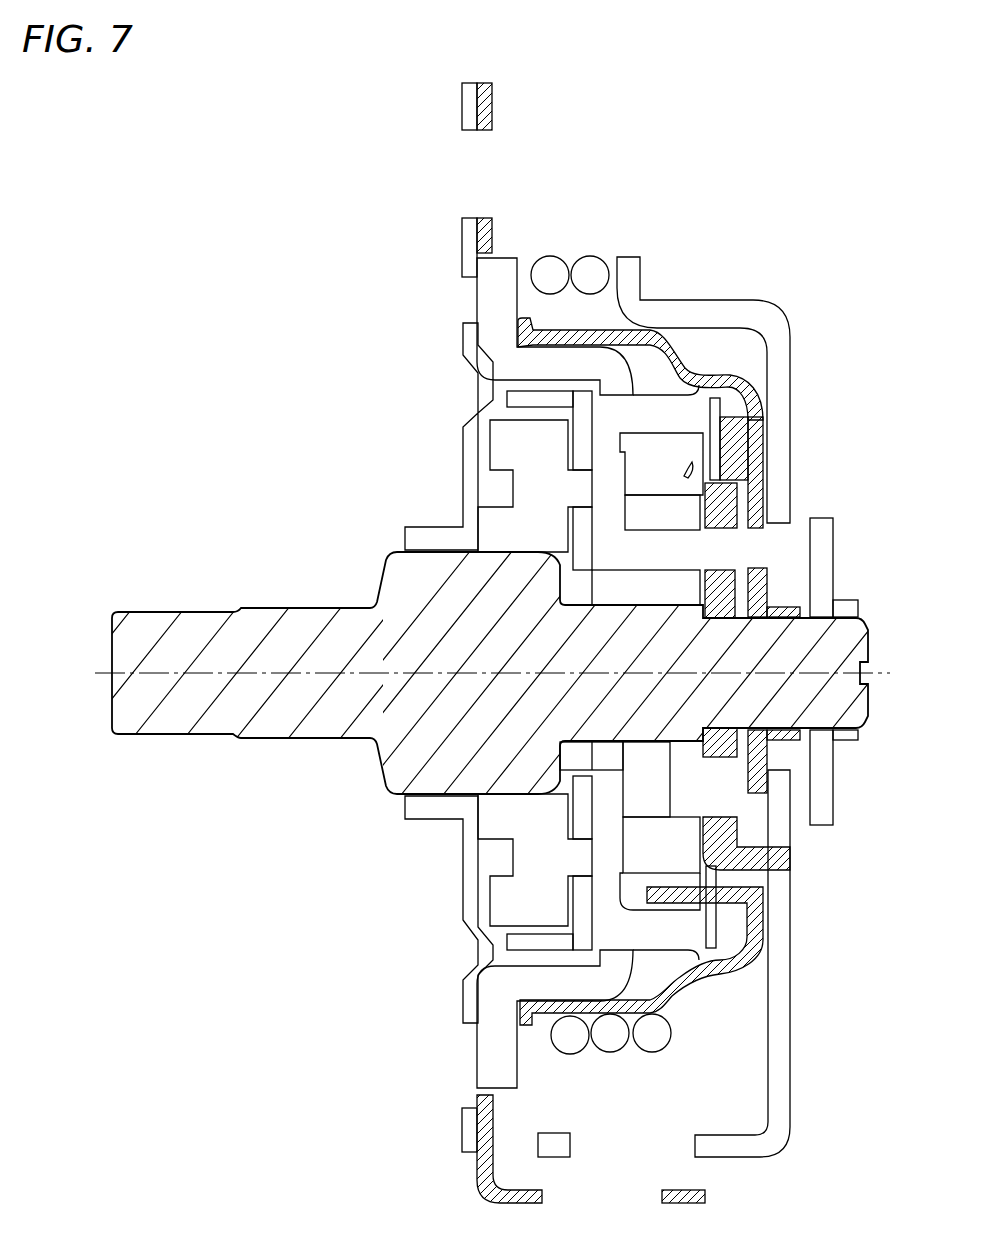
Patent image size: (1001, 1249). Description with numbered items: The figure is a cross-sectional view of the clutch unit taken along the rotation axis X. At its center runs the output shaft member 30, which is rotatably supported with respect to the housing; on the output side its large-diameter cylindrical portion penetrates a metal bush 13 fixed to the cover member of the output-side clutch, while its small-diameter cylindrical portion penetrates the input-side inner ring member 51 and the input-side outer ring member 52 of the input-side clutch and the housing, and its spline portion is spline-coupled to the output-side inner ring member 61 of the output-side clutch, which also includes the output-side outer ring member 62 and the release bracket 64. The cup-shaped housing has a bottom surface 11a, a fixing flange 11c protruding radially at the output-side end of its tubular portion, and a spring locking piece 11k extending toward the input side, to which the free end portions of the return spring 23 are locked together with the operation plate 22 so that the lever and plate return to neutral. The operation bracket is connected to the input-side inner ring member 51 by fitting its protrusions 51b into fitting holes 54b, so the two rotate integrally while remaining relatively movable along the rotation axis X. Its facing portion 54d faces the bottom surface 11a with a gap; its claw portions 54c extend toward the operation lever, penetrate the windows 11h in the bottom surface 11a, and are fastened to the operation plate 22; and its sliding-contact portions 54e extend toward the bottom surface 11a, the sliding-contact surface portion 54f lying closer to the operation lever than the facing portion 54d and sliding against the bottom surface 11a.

The bottom surface 11a is at (795, 497).
The fixing flange 11c is at (492, 100).
The window 11h is at (775, 870).
The spring locking piece 11k is at (705, 1197).
The metal bush 13 is at (440, 540).
The operation plate 22 is at (742, 300).
The return spring 23 is at (580, 256).
The output shaft member 30 is at (220, 608).
The input-side inner ring member 51 is at (690, 865).
The protrusion 51b is at (740, 775).
The input-side outer ring member 52 is at (700, 392).
The fitting hole 54b is at (755, 790).
The claw portion 54c is at (760, 852).
The facing portion 54d is at (720, 593).
The sliding-contact portion 54e is at (745, 430).
The sliding-contact surface portion 54f is at (768, 447).
The output-side inner ring member 61 is at (500, 440).
The output-side outer ring member 62 is at (485, 285).
The release bracket 64 is at (505, 398).
The rotation axis X is at (95, 665).